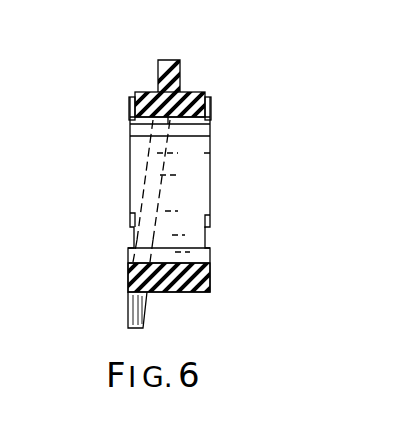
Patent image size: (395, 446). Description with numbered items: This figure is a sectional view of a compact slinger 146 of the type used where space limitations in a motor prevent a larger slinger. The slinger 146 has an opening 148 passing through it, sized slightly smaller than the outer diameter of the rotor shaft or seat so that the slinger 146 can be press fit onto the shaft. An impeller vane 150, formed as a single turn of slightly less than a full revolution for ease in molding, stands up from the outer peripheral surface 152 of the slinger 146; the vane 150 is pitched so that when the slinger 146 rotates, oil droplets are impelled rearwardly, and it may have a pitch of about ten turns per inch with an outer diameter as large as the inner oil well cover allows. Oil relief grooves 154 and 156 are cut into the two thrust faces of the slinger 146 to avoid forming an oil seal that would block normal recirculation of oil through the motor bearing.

The slinger 146 is at (102, 130).
The opening 148 is at (191, 120).
The impeller vane 150 is at (168, 63).
The outer peripheral surface 152 is at (170, 294).
The oil relief groove 154 is at (130, 108).
The oil relief groove 156 is at (213, 102).